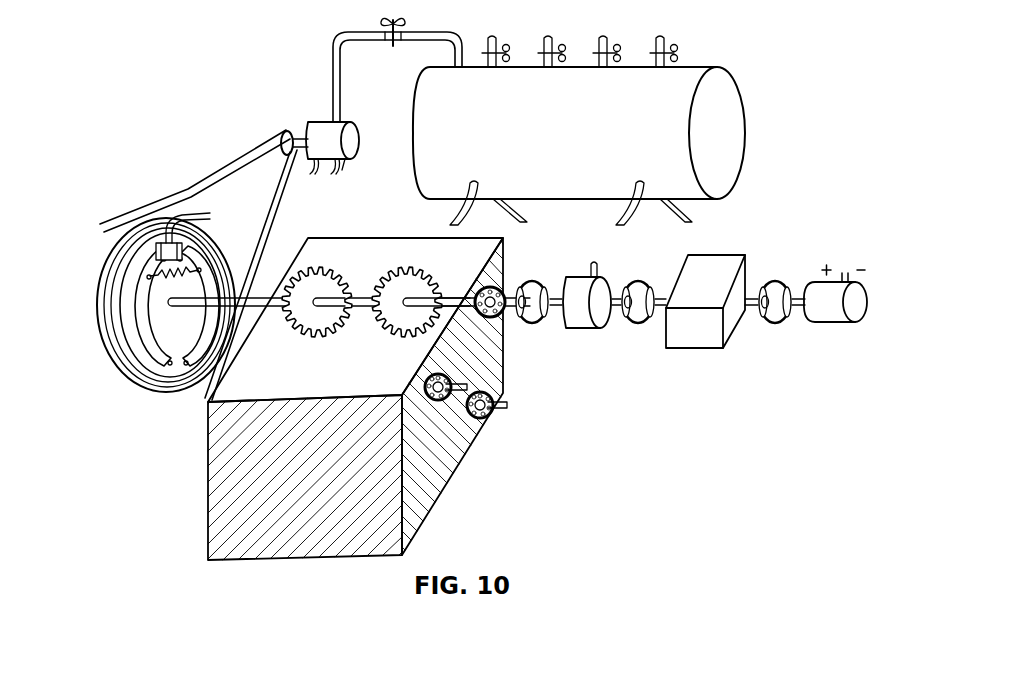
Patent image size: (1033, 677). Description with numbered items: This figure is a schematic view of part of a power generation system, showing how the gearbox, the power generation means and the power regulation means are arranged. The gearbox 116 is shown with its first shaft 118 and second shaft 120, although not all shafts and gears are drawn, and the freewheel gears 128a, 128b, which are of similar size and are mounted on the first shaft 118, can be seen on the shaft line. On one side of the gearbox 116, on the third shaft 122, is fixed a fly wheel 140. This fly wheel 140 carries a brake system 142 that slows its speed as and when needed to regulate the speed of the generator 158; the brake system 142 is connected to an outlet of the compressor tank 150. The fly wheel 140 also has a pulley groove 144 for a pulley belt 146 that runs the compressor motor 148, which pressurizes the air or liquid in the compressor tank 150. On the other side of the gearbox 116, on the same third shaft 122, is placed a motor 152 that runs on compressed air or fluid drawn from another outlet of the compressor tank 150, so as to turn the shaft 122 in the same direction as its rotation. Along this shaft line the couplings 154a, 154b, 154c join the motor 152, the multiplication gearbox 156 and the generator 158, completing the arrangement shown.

The gearbox 116 is at (330, 399).
The first shaft 118 is at (476, 441).
The second shaft 120 is at (508, 406).
The third shaft 122 is at (296, 258).
The freewheel gear 128a is at (425, 272).
The freewheel gear 128b is at (340, 268).
The fly wheel 140 is at (160, 330).
The brake system 142 is at (166, 243).
The pulley groove 144 is at (108, 305).
The pulley belt 146 is at (297, 190).
The compressor motor 148 is at (315, 124).
The compressor tank 150 is at (690, 72).
The motor that runs on compressed air 152 is at (580, 324).
The coupling 154a is at (534, 280).
The coupling 154b is at (641, 280).
The coupling 154c is at (779, 279).
The multiplication gearbox 156 is at (722, 266).
The generator 158 is at (835, 313).